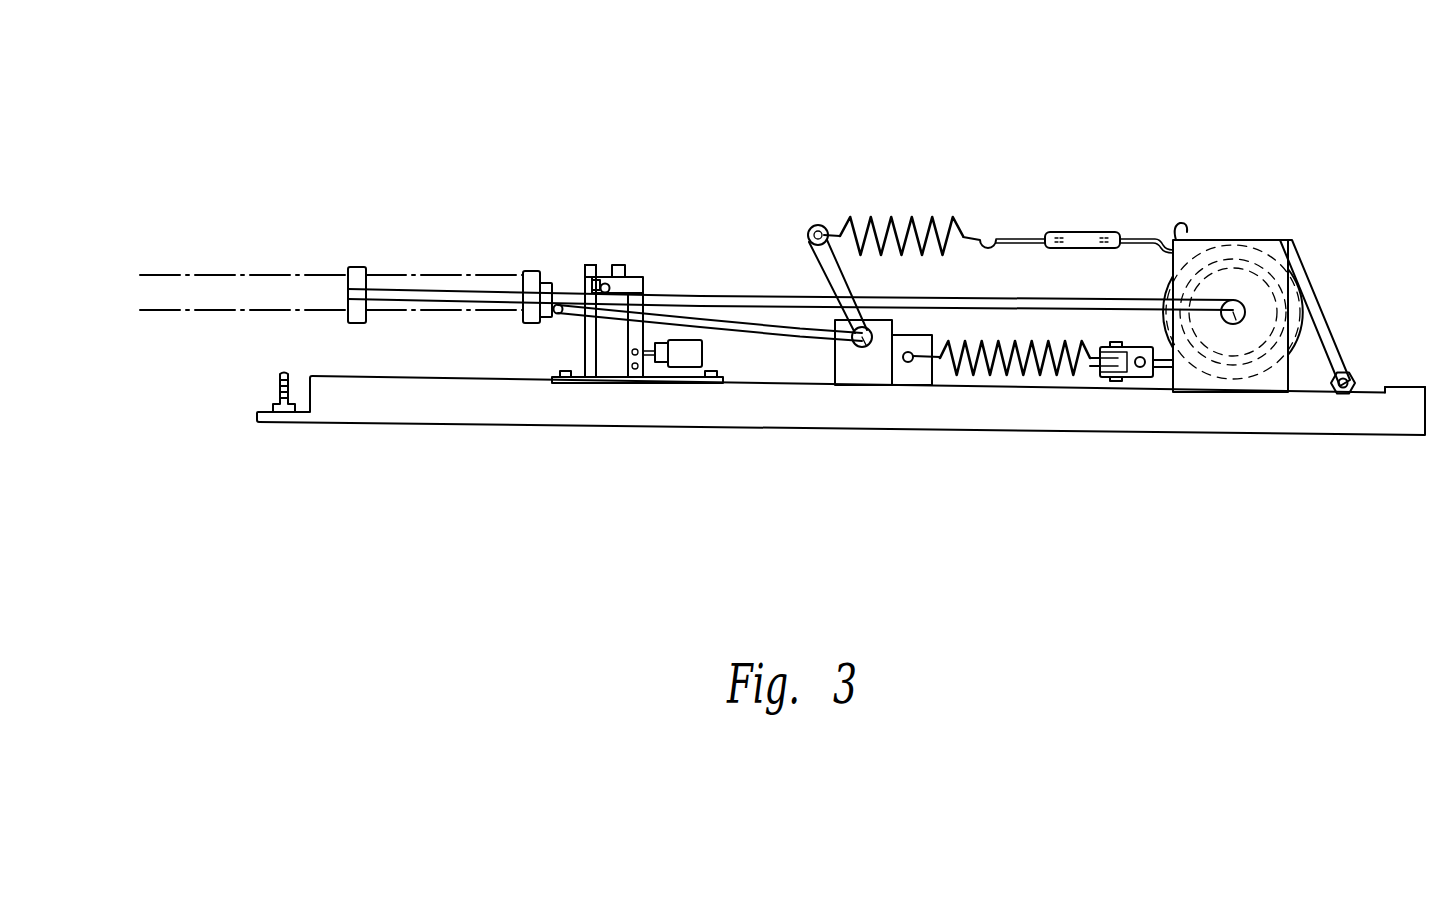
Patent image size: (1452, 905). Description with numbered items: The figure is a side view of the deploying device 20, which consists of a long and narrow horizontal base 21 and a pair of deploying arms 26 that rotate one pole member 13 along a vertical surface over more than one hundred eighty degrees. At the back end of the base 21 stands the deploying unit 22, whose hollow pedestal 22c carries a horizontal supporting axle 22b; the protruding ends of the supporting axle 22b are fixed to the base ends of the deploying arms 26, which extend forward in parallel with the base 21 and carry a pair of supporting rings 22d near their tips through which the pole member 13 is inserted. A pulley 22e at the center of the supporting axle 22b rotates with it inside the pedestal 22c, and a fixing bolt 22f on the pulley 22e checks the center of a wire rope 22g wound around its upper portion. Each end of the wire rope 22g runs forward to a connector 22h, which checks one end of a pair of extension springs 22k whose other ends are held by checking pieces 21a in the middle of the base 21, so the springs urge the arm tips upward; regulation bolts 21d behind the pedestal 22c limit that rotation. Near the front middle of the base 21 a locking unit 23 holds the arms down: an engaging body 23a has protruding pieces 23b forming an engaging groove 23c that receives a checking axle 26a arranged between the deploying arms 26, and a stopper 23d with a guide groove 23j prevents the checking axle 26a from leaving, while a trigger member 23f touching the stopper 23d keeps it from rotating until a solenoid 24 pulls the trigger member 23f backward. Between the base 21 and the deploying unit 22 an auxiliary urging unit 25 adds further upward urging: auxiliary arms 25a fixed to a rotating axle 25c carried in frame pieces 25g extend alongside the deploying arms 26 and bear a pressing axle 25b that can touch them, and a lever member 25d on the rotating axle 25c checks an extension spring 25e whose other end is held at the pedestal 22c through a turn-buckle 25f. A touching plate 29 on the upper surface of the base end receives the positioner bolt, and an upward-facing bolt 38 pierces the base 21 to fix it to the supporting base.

The pole member 13 is at (163, 283).
The deploying device 20 is at (1084, 133).
The base 21 is at (1393, 408).
The checking pieces 21a is at (915, 380).
The regulation bolts 21d is at (1352, 375).
The deploying unit 22 is at (1033, 474).
The supporting axle 22b is at (1233, 300).
The pedestal 22c is at (1288, 241).
The supporting rings 22d is at (357, 267).
The pulley 22e is at (1166, 285).
The fixing bolt 22f is at (1160, 330).
The wire rope 22g is at (1162, 392).
The connector 22h is at (1127, 378).
The extension springs 22k is at (1030, 378).
The locking unit 23 is at (602, 168).
The engaging body 23a is at (592, 350).
The protruding pieces 23b is at (593, 292).
The engaging groove 23c is at (603, 276).
The stopper 23d is at (635, 284).
The trigger member 23f is at (645, 378).
The guide groove 23j is at (601, 284).
The solenoid 24 is at (685, 357).
The auxiliary urging unit 25 is at (668, 327).
The auxiliary arms 25a is at (749, 325).
The pressing axle 25b is at (587, 293).
The rotating axle 25c is at (870, 350).
The lever member 25d is at (820, 222).
The extension spring 25e is at (908, 218).
The turn-buckle 25f is at (1083, 233).
The frame pieces 25g is at (842, 375).
The deploying arms 26 is at (707, 296).
The checking axle 26a is at (597, 348).
The touching plate 29 is at (1430, 377).
The bolt 38 is at (280, 376).